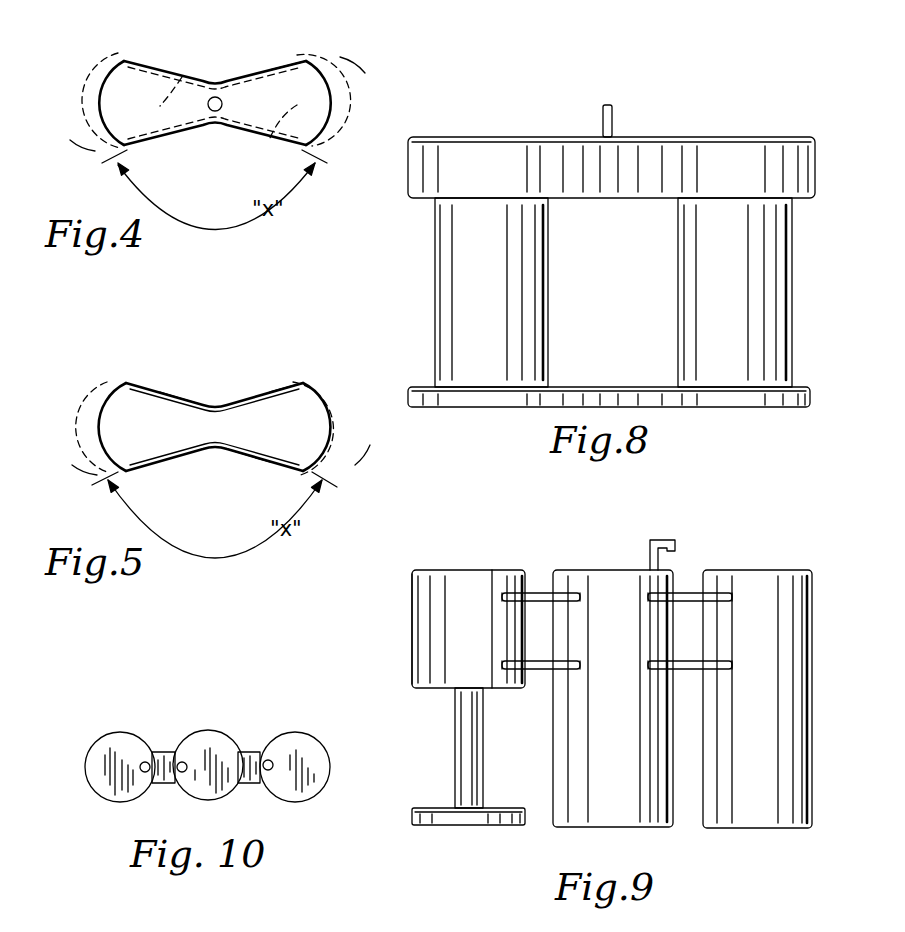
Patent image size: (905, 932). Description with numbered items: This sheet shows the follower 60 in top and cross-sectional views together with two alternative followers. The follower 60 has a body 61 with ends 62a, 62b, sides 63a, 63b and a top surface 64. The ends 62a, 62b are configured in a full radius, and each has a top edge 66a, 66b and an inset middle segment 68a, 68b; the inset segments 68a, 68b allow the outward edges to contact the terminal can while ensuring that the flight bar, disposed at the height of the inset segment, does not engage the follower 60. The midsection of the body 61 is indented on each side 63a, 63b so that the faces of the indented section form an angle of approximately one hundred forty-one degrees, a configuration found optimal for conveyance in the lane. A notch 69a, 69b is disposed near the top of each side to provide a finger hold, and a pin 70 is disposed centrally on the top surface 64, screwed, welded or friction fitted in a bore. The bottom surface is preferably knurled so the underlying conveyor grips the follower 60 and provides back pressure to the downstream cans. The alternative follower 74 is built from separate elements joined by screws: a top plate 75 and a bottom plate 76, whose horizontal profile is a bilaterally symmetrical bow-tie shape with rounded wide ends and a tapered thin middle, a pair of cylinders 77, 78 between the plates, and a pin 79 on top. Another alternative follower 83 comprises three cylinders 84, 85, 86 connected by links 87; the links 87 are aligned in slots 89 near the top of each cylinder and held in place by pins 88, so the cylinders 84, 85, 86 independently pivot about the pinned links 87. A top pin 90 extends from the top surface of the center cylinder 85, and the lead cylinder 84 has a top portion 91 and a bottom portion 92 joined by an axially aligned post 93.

In FIG. 4, the follower 60 is at (247, 106).
In FIG. 5, the follower 60 is at (230, 429).
In FIG. 4, the body 61 is at (291, 63).
In FIG. 5, the body 61 is at (288, 388).
In FIG. 4, the end 62a is at (45, 87).
In FIG. 5, the end 62a is at (45, 404).
In FIG. 4, the end 62b is at (396, 102).
In FIG. 5, the end 62b is at (379, 466).
In FIG. 4, the side 63a is at (205, 149).
In FIG. 5, the side 63a is at (217, 465).
In FIG. 4, the side 63b is at (222, 60).
In FIG. 5, the side 63b is at (214, 388).
In FIG. 4, the top surface 64 is at (131, 91).
In FIG. 4, the top edge 66a is at (71, 141).
In FIG. 5, the top edge 66a is at (75, 472).
In FIG. 4, the top edge 66b is at (360, 66).
In FIG. 5, the top edge 66b is at (372, 447).
In FIG. 4, the inset middle segment 68a is at (102, 61).
In FIG. 5, the inset middle segment 68a is at (78, 433).
In FIG. 4, the inset middle segment 68b is at (300, 150).
In FIG. 5, the inset middle segment 68b is at (327, 390).
In FIG. 4, the notch 69a is at (297, 111).
In FIG. 5, the notch 69a is at (277, 467).
In FIG. 4, the notch 69b is at (151, 96).
In FIG. 5, the notch 69b is at (167, 392).
In FIG. 4, the pin 70 is at (222, 104).
In FIG. 8, the follower 74 is at (615, 253).
In FIG. 8, the top plate 75 is at (712, 147).
In FIG. 8, the bottom plate 76 is at (423, 390).
In FIG. 8, the cylinder 77 is at (538, 280).
In FIG. 8, the cylinder 78 is at (783, 278).
In FIG. 8, the pin 79 is at (608, 105).
In FIG. 9, the follower 83 is at (605, 662).
In FIG. 10, the follower 83 is at (190, 751).
In FIG. 9, the lead cylinder 84 is at (500, 577).
In FIG. 10, the lead cylinder 84 is at (92, 777).
In FIG. 9, the center cylinder 85 is at (628, 637).
In FIG. 10, the center cylinder 85 is at (210, 732).
In FIG. 9, the cylinder 86 is at (757, 580).
In FIG. 10, the cylinder 86 is at (293, 795).
In FIG. 9, the link 87 is at (542, 593).
In FIG. 10, the link 87 is at (163, 783).
In FIG. 10, the pin 88 is at (143, 760).
In FIG. 9, the slot 89 is at (502, 597).
In FIG. 9, the top pin 90 is at (670, 540).
In FIG. 9, the top portion 91 is at (452, 578).
In FIG. 9, the bottom portion 92 is at (435, 813).
In FIG. 9, the post 93 is at (459, 718).